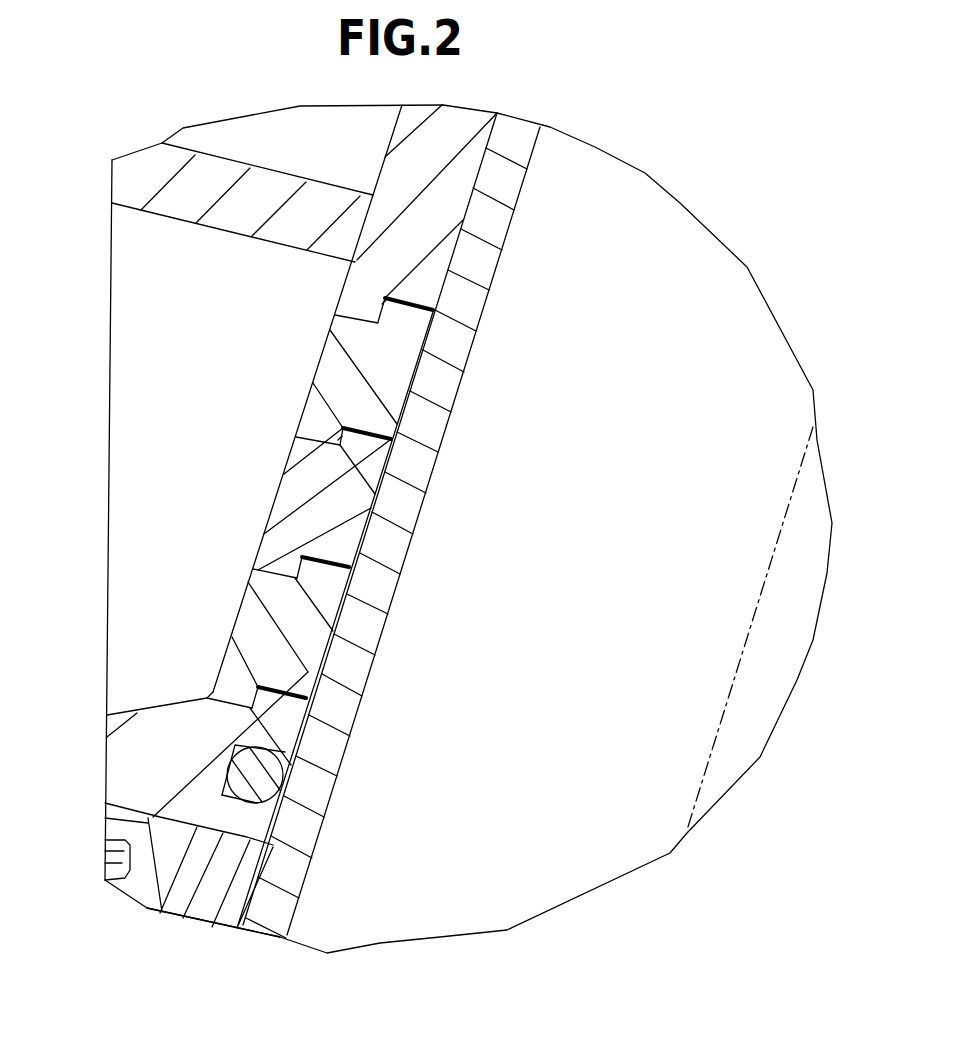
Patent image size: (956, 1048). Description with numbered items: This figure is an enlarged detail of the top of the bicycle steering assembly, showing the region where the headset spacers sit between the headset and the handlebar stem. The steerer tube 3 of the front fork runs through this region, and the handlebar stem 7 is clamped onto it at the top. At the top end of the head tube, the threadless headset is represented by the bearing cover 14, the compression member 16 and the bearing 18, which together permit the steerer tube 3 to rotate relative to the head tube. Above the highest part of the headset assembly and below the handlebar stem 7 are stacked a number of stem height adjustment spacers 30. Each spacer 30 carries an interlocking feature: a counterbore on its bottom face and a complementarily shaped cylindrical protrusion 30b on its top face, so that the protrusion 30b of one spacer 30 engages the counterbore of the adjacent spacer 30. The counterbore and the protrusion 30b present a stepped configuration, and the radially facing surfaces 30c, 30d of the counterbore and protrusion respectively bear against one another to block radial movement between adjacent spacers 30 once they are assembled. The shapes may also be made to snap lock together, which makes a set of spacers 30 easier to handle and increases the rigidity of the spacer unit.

The steerer tube 3 is at (553, 600).
The handlebar stem 7 is at (172, 220).
The bearing cover 14 is at (158, 725).
The compression member 16 is at (203, 905).
The bearing 18 is at (108, 883).
The spacer 30 is at (322, 353).
The protrusion 30b is at (402, 326).
The radially facing surface of the counterbore 30c is at (388, 305).
The radially facing surface of the protrusion 30d is at (345, 445).